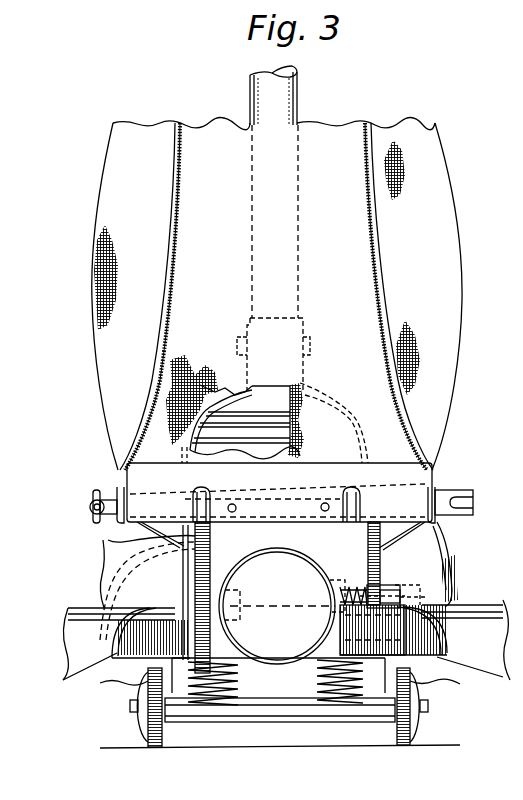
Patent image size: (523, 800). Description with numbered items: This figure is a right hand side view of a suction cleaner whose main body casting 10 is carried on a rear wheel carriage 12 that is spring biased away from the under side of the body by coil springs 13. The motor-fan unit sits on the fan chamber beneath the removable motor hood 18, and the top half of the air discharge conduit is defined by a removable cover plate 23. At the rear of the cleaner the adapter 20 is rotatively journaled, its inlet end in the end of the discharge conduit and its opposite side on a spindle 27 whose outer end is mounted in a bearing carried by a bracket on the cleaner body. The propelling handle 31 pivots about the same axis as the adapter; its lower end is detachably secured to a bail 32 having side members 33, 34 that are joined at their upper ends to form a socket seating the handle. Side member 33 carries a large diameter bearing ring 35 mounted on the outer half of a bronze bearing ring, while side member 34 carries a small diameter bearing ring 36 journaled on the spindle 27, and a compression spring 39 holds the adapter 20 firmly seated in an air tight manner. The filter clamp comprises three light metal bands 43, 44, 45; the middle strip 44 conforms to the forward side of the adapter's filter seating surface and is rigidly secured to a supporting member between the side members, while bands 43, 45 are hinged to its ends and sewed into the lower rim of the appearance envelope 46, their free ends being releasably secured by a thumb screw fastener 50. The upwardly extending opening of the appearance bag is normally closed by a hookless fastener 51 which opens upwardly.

The main body casting 10 is at (286, 642).
The rear wheel carriage 12 is at (150, 750).
The coil springs 13 is at (238, 680).
The removable motor hood 18 is at (450, 575).
The adapter 20 is at (313, 562).
The removable cover plate 23 is at (110, 580).
The spindle 27 is at (430, 597).
The propelling handle 31 is at (280, 108).
The bail 32 is at (218, 413).
The side member 33 is at (183, 474).
The side member 34 is at (373, 476).
The large diameter bearing ring 35 is at (212, 528).
The small diameter bearing ring 36 is at (378, 596).
The compression spring 39 is at (367, 592).
The metal band 43 is at (107, 525).
The middle strip 44 is at (292, 517).
The metal band 45 is at (452, 520).
The appearance envelope 46 is at (277, 293).
The thumb screw fastener 50 is at (89, 504).
The hookless fastener 51 is at (178, 199).